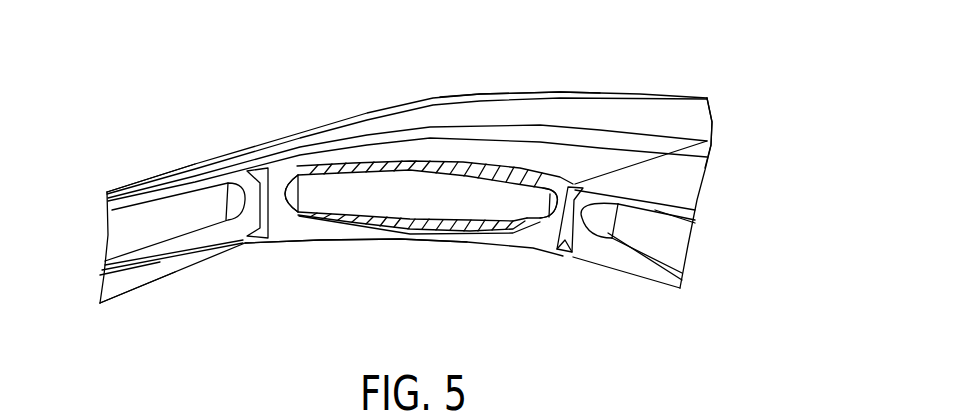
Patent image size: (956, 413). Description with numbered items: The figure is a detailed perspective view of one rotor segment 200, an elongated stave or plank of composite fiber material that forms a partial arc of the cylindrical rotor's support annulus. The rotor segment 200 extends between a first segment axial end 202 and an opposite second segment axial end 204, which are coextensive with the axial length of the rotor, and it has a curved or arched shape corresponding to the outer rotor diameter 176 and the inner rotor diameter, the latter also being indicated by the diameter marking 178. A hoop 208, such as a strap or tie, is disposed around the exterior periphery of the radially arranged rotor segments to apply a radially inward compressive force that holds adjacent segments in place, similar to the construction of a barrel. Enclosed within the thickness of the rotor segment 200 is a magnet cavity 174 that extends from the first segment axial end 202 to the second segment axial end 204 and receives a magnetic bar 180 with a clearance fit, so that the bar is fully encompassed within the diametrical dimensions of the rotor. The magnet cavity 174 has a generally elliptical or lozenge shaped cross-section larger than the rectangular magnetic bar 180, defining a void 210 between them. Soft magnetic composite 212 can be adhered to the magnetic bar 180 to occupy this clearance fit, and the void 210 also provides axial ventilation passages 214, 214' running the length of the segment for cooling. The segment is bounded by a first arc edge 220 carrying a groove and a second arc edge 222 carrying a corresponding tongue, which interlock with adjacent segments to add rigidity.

The magnet cavity 174 is at (327, 262).
The outer rotor diameter 176 is at (123, 280).
The outer diameter 178 is at (125, 176).
The magnetic bar 180 is at (413, 200).
The rotor segment 200 is at (440, 113).
The first segment axial end 202 is at (237, 245).
The second segment axial end 204 is at (505, 92).
The hoop 208 is at (705, 157).
The void 210 is at (290, 186).
The soft magnetic composite 212 is at (372, 168).
The axial ventilation passage 214 is at (279, 245).
The second end of recess 214' is at (522, 246).
The first arc edge 220 is at (258, 195).
The second arc edge 222 is at (563, 255).